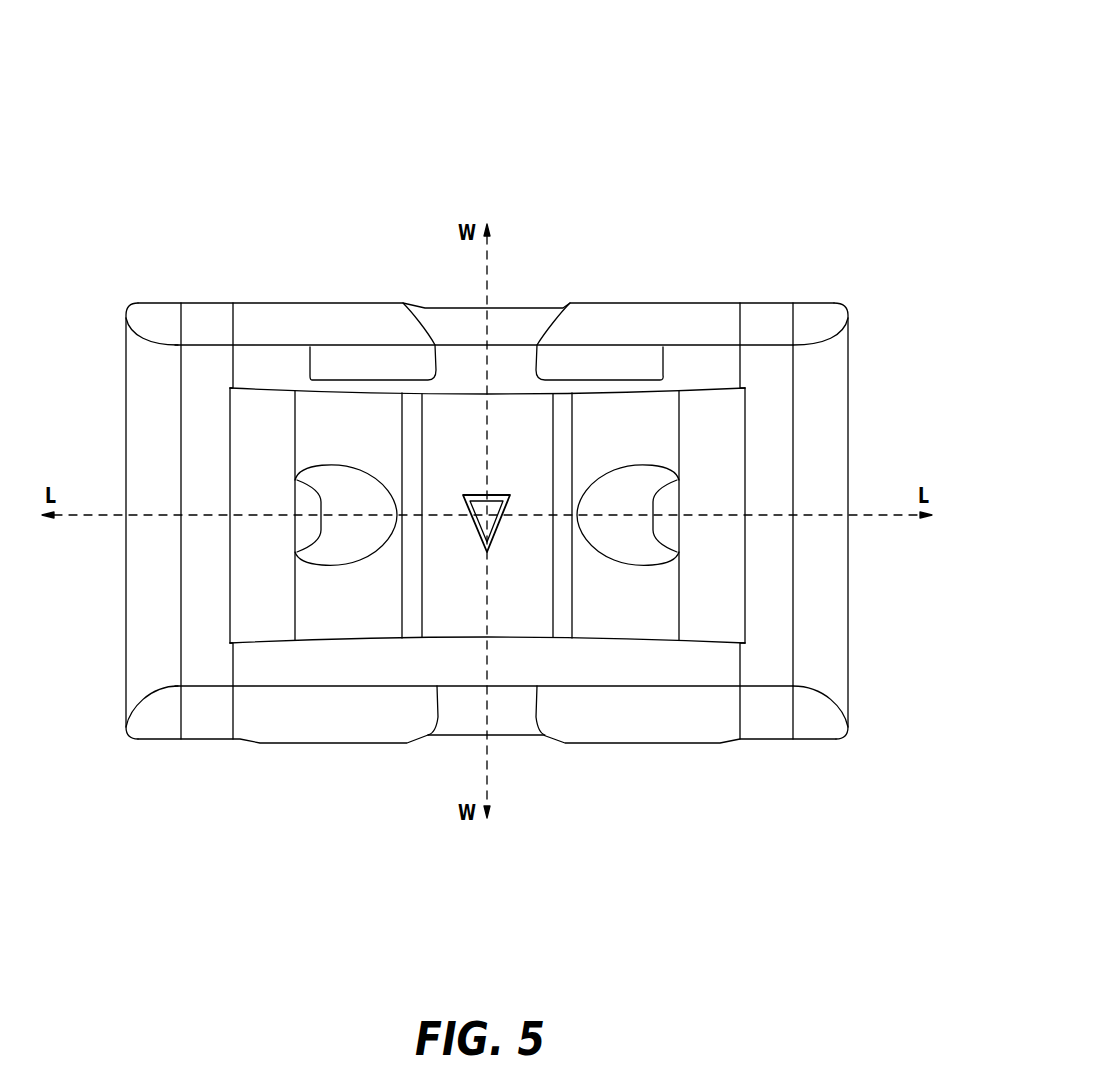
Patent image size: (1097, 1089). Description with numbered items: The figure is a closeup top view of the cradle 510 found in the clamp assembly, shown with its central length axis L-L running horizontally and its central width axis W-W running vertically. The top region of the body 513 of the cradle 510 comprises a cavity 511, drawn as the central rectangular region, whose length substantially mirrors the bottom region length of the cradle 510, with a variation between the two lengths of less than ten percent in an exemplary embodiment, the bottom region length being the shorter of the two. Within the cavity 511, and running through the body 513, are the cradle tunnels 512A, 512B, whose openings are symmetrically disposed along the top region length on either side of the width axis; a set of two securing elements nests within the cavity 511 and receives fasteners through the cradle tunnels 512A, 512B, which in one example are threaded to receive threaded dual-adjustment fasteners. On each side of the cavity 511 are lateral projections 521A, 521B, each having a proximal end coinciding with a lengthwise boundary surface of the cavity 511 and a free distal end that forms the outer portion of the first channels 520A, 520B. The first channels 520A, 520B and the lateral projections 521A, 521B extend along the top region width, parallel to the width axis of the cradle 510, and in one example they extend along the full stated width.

The cradle 510 is at (832, 44).
The cavity 511 is at (505, 430).
The cradle tunnel 512A is at (343, 493).
The cradle tunnel 512B is at (635, 487).
The body 513 is at (516, 727).
The first channel 520A is at (188, 741).
The first channel 520B is at (783, 741).
The lateral projection 521A is at (136, 574).
The lateral projection 521B is at (838, 574).